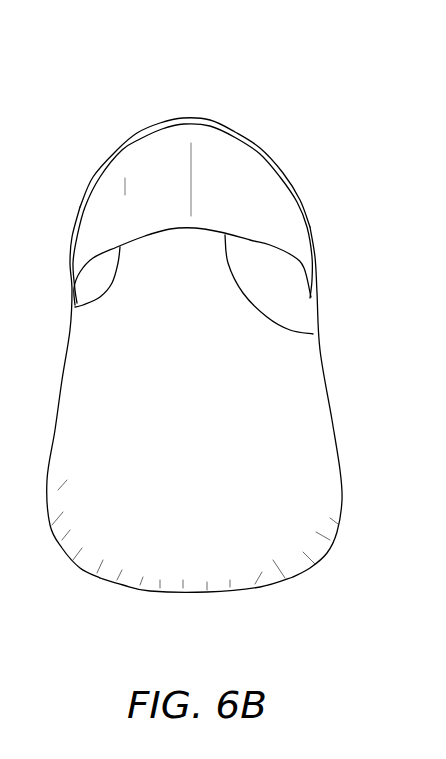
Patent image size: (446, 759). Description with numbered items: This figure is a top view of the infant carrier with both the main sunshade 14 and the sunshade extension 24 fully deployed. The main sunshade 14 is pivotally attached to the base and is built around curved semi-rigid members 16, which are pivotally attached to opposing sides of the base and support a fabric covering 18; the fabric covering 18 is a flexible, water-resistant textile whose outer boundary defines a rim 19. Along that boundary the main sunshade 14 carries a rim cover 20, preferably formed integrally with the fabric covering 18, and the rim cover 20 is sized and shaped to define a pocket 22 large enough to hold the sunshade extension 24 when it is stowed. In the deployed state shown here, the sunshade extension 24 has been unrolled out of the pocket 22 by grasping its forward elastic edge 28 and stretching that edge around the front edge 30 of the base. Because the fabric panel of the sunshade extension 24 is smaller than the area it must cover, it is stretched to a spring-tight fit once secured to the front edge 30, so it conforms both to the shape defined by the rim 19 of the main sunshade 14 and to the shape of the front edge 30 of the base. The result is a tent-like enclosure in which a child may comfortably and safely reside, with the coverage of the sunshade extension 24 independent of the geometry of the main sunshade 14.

The main sunshade 14 is at (183, 155).
The curved semi-rigid members 16 is at (293, 257).
The fabric covering 18 is at (251, 177).
The rim 19 is at (75, 307).
The rim cover 20 is at (147, 160).
The pocket 22 is at (315, 334).
The sunshade extension 24 is at (100, 435).
The forward elastic edge 28 is at (150, 583).
The front edge 30 is at (243, 590).